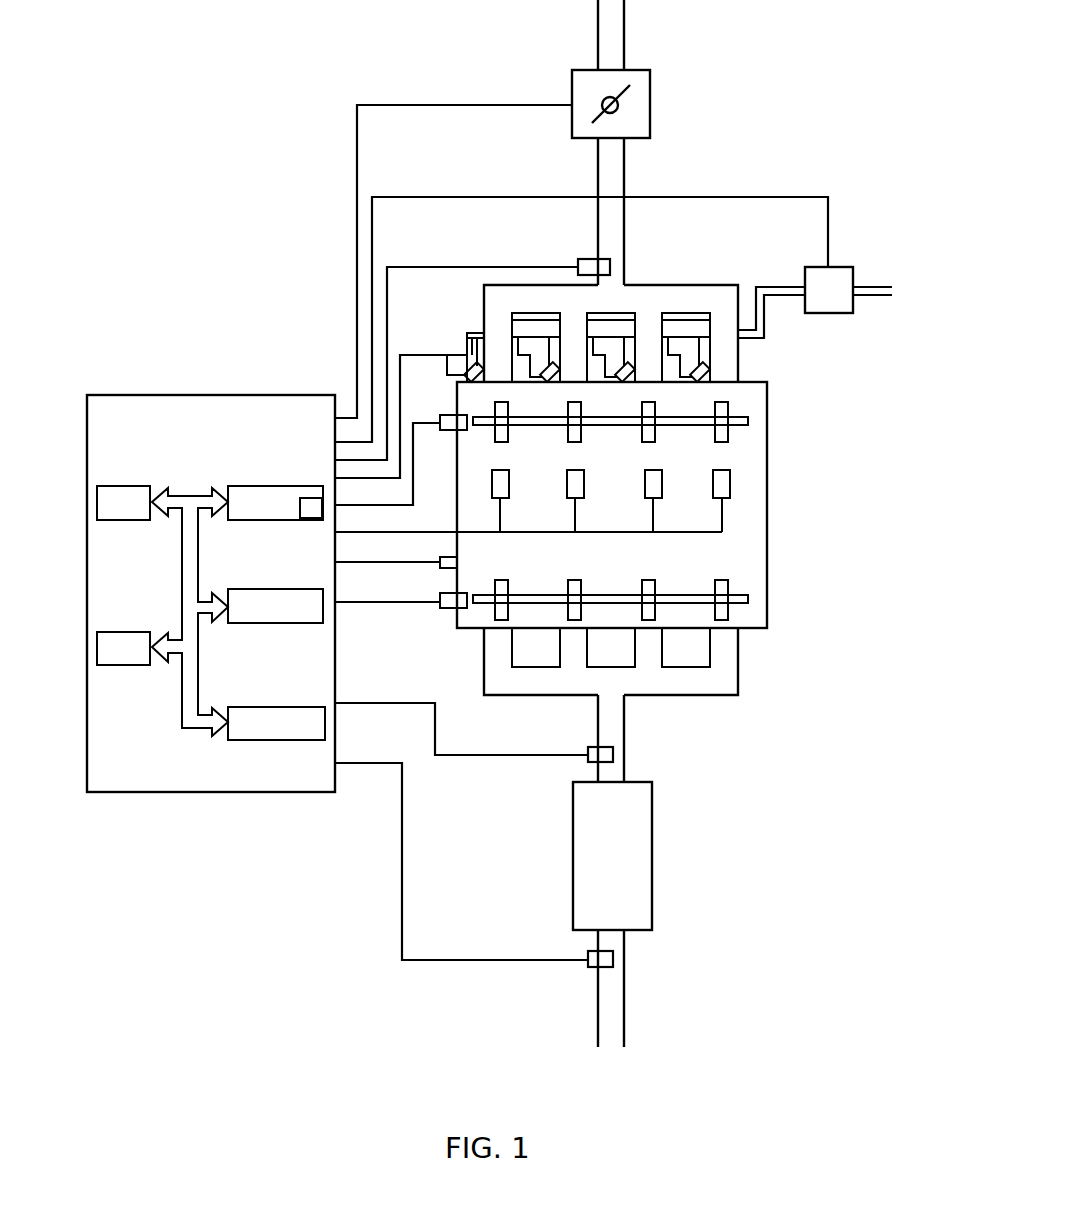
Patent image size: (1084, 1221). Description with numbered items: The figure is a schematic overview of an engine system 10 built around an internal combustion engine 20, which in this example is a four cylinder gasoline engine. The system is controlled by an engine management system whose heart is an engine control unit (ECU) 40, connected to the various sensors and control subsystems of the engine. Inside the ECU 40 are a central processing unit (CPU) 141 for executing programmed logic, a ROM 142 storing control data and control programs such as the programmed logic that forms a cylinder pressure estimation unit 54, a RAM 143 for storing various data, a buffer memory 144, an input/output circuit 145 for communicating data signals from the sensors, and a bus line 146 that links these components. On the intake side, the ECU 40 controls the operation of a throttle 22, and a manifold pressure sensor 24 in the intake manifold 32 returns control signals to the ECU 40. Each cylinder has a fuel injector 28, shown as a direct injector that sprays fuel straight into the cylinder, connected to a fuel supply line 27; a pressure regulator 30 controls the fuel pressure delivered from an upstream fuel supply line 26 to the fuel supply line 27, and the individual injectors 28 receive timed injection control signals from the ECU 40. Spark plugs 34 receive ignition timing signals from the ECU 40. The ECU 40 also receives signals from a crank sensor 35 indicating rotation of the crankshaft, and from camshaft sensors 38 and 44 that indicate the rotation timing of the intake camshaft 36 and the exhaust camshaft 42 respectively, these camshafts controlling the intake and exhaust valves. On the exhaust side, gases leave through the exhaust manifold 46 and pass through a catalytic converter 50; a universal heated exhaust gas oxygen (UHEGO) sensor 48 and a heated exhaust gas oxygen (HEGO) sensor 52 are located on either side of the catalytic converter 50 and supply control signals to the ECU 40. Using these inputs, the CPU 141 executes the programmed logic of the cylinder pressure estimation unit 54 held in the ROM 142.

The engine system 10 is at (230, 1072).
The internal combustion engine 20 is at (830, 520).
The throttle 22 is at (652, 102).
The manifold pressure sensor 24 is at (580, 258).
The fuel supply line 26 is at (870, 297).
The fuel supply line 27 is at (770, 334).
The fuel injector 28 is at (457, 386).
The pressure regulator 30 is at (813, 266).
The intake manifold 32 is at (697, 284).
The spark plugs 34 is at (732, 485).
The crank sensor 35 is at (438, 570).
The intake camshaft 36 is at (752, 422).
The camshaft sensor 38 is at (448, 432).
The engine control unit 40 is at (140, 397).
The exhaust camshaft 42 is at (752, 598).
The camshaft sensor 44 is at (443, 610).
The exhaust manifold 46 is at (717, 695).
The universal heated exhaust gas oxygen sensor 48 is at (587, 762).
The catalytic converter 50 is at (652, 822).
The heated exhaust gas oxygen sensor 52 is at (587, 967).
The cylinder pressure estimation unit 54 is at (310, 498).
The central processing unit 141 is at (108, 485).
The ROM 142 is at (252, 485).
The RAM 143 is at (255, 589).
The buffer memory 144 is at (273, 707).
The input/output circuit 145 is at (113, 632).
The bus line 146 is at (180, 708).